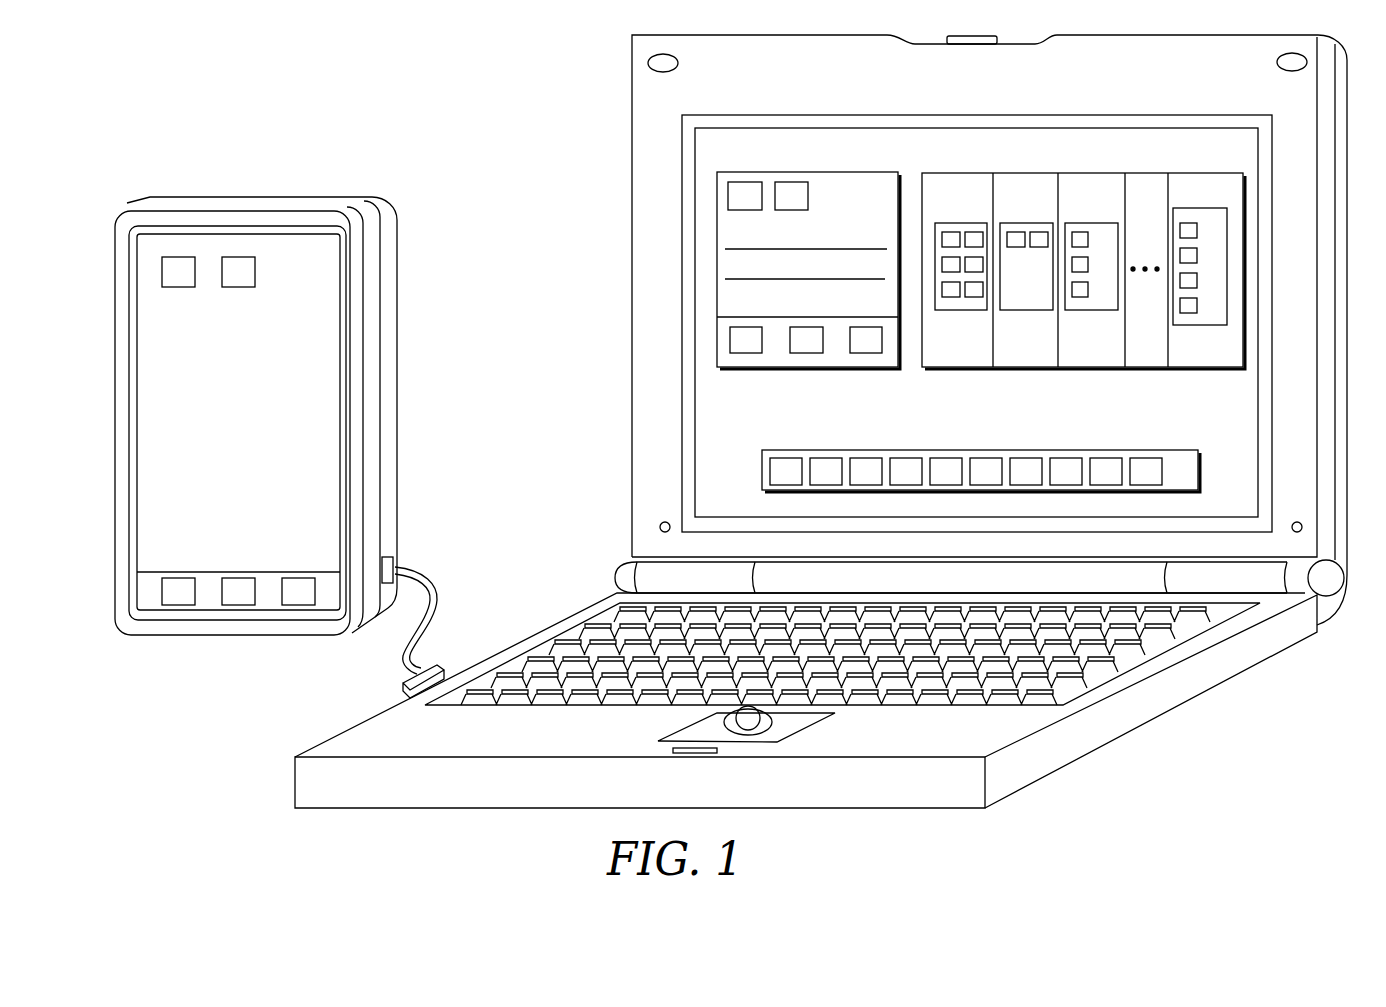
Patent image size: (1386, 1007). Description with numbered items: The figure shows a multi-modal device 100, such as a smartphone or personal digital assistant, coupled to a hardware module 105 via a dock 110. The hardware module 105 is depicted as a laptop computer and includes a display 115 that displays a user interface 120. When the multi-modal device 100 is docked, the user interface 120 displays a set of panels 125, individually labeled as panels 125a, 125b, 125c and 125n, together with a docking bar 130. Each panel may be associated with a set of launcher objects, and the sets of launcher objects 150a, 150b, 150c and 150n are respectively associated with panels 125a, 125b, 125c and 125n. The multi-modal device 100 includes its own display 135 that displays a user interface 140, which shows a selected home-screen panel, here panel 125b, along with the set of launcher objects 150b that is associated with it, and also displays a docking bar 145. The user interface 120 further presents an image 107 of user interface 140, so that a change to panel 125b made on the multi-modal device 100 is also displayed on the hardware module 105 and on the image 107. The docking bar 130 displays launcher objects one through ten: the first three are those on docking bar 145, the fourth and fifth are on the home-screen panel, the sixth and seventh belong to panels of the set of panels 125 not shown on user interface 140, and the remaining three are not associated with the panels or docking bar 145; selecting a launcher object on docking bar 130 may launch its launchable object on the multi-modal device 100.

The multi-modal device 100 is at (285, 404).
The hardware module 105 is at (623, 747).
The image of user interface 107 is at (845, 171).
The dock 110 is at (445, 601).
The display 115 is at (681, 215).
The user interface 120 is at (694, 294).
The set of panels 125 is at (1185, 172).
The panel 125a is at (980, 204).
The panel 125b is at (1045, 204).
The panel 125c is at (1110, 204).
The panel 125n is at (1228, 204).
The docking bar 130 is at (1098, 448).
The display 135 is at (351, 305).
The user interface 140 is at (343, 360).
The docking bar 145 is at (207, 607).
The set of launcher objects 150a is at (956, 312).
The set of launcher objects 150b is at (1028, 312).
The set of launcher objects 150c is at (1093, 312).
The set of launcher objects 150n is at (1193, 327).